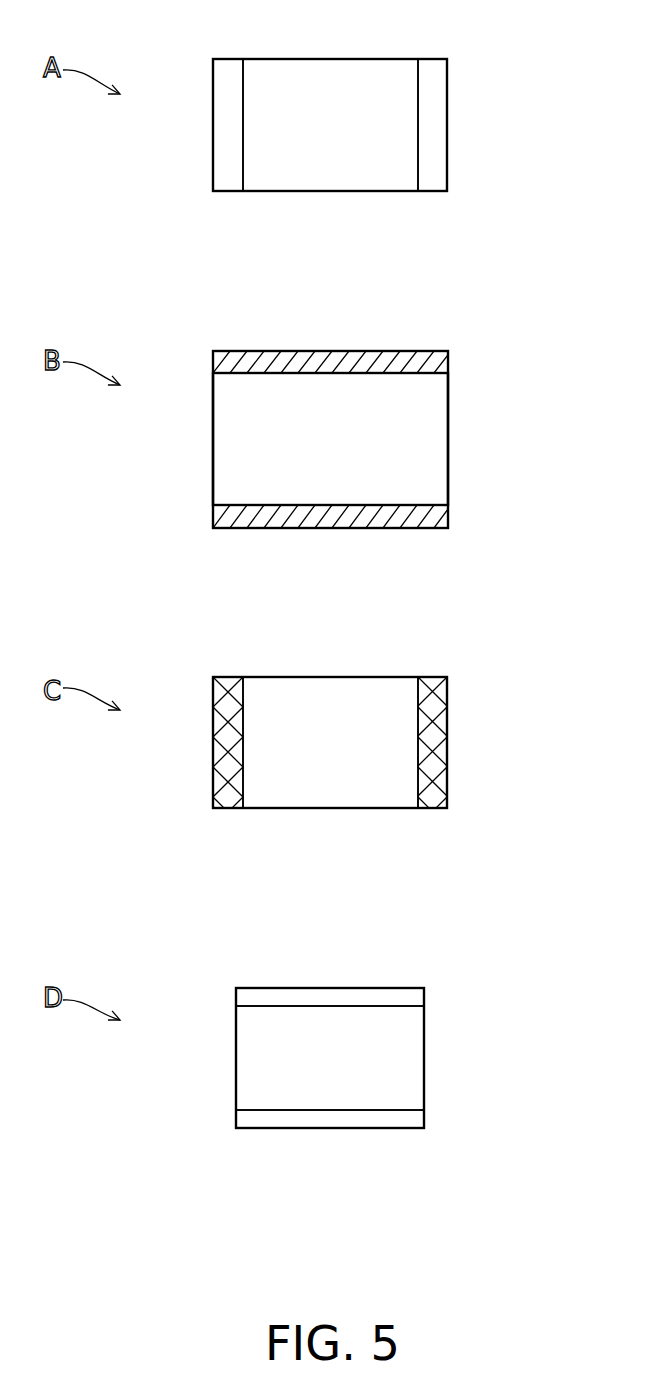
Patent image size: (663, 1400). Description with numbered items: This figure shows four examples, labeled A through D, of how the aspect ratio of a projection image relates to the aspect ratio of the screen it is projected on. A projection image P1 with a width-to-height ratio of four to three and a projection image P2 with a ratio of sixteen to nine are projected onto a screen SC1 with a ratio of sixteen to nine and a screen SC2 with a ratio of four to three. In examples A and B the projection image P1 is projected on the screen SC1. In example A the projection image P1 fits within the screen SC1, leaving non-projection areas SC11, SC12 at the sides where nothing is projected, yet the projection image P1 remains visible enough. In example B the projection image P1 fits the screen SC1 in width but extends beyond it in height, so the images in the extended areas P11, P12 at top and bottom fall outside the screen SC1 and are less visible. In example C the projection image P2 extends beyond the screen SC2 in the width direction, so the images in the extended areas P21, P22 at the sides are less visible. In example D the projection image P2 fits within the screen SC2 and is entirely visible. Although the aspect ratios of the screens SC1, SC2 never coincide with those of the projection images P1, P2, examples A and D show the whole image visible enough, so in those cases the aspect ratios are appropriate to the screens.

The projection image P1 is at (362, 75).
The screen SC1 is at (437, 100).
The non-projection area SC11 is at (431, 197).
The non-projection area SC12 is at (228, 197).
The extended area P11 is at (455, 360).
The extended area P12 is at (455, 515).
The screen SC2 is at (330, 675).
The projection image P2 is at (440, 718).
The extended area P21 is at (431, 813).
The extended area P22 is at (228, 813).